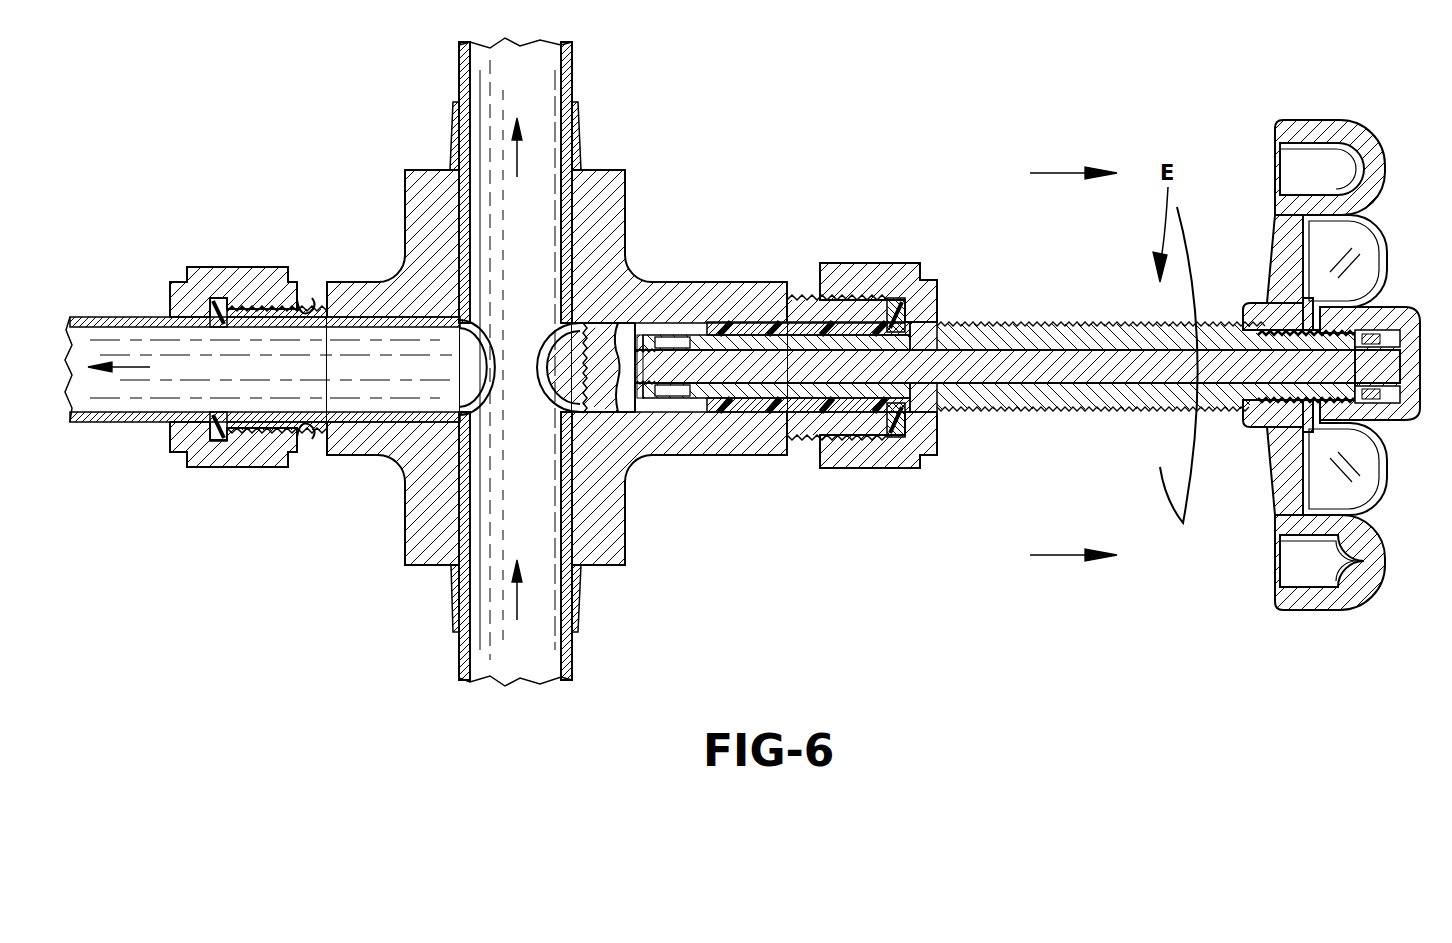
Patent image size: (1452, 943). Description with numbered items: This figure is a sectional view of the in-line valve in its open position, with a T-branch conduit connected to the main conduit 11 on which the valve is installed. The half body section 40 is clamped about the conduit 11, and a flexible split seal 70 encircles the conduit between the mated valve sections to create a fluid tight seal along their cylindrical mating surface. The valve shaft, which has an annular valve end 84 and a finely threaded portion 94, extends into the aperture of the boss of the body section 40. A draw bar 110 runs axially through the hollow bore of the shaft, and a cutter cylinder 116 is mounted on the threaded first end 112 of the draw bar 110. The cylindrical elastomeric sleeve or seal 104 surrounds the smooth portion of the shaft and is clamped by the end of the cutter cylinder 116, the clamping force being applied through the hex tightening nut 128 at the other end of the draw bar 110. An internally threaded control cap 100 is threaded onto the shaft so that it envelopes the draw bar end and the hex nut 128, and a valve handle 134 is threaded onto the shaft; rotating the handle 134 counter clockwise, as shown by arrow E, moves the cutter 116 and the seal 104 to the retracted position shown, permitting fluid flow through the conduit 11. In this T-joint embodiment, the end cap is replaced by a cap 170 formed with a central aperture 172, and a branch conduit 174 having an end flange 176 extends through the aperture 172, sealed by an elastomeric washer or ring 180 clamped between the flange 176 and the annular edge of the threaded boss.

The conduit 11 is at (540, 660).
The half body section 40 is at (605, 176).
The split seal 70 is at (578, 112).
The annular valve end 84 is at (1265, 428).
The finely threaded portion 94 is at (1103, 409).
The control cap 100 is at (1400, 309).
The sleeve or seal 104 is at (778, 328).
The draw bar 110 is at (1015, 370).
The threaded first end 112 is at (642, 352).
The cutter cylinder 116 is at (612, 395).
The hex tightening nut 128 is at (1385, 400).
The valve handle 134 is at (1322, 605).
The cap 170 is at (245, 272).
The aperture 172 is at (308, 314).
The branch conduit 174 is at (113, 393).
The end flange 176 is at (205, 302).
The elastomeric washer or ring 180 is at (222, 432).